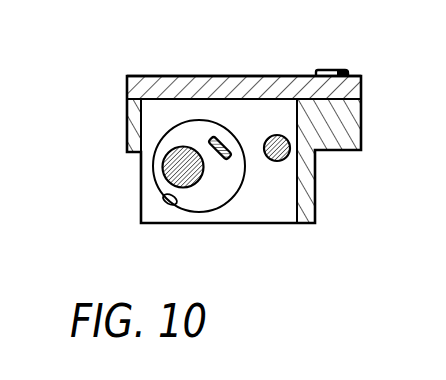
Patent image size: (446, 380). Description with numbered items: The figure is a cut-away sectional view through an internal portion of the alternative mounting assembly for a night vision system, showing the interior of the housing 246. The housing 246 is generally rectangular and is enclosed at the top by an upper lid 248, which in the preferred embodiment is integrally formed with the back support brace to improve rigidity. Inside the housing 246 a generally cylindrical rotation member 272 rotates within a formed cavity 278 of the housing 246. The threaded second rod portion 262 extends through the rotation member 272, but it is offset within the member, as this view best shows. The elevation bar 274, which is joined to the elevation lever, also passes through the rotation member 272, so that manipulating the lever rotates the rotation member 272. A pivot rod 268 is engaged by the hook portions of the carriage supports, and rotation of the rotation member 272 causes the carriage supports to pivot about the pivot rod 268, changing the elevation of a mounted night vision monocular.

The housing 246 is at (302, 190).
The upper lid 248 is at (267, 88).
The second portion of rod 262 is at (178, 174).
The pivot rod 268 is at (272, 162).
The rotation member 272 is at (182, 135).
The elevation bar 274 is at (217, 158).
The formed cavity 278 is at (163, 197).